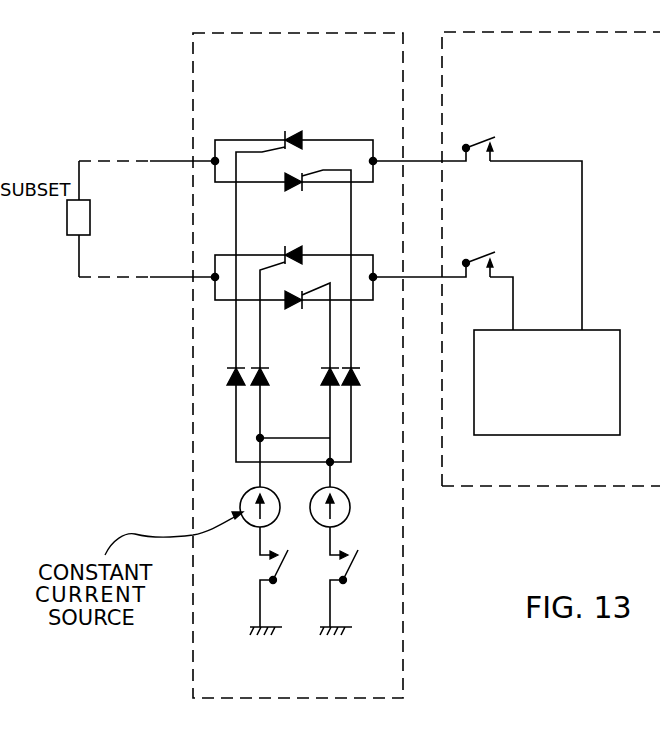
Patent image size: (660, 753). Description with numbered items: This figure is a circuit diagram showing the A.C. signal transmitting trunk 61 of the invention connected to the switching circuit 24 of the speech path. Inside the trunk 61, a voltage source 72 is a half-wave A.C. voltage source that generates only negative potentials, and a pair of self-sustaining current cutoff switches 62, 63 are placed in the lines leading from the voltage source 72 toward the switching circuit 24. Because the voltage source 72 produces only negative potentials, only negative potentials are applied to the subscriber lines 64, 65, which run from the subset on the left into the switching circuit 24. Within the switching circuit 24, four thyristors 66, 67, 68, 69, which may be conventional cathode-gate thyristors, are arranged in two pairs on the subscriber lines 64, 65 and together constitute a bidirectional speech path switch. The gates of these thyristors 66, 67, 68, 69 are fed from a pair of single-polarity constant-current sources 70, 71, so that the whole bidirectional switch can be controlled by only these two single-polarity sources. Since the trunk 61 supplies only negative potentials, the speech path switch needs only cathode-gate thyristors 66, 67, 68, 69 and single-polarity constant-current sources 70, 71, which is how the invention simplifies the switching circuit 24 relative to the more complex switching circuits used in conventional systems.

The switching circuit 24 is at (280, 698).
The A.C. signal transmitting trunk 61 is at (578, 486).
The self-sustaining current cutoff switch 62 is at (475, 155).
The self-sustaining current cutoff switch 63 is at (494, 261).
The subscriber line 64 is at (162, 160).
The subscriber line 65 is at (150, 278).
The thyristor 66 is at (295, 310).
The thyristor 67 is at (290, 246).
The thyristor 68 is at (283, 192).
The thyristor 69 is at (290, 130).
The single-polarity constant-current source 70 is at (250, 517).
The single-polarity constant-current source 71 is at (350, 522).
The voltage source 72 is at (474, 417).